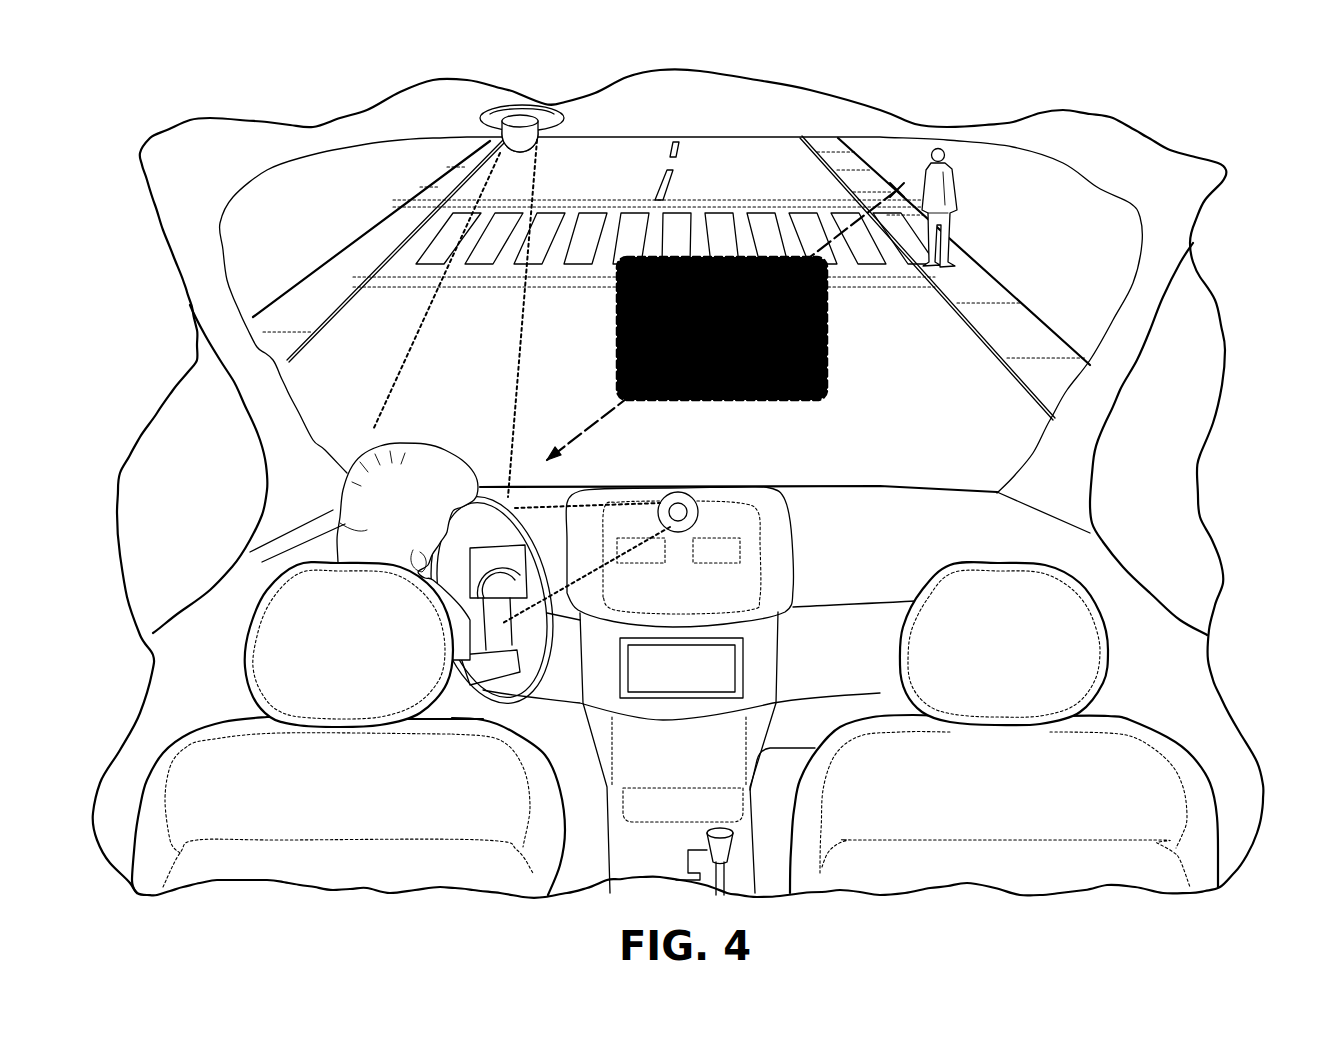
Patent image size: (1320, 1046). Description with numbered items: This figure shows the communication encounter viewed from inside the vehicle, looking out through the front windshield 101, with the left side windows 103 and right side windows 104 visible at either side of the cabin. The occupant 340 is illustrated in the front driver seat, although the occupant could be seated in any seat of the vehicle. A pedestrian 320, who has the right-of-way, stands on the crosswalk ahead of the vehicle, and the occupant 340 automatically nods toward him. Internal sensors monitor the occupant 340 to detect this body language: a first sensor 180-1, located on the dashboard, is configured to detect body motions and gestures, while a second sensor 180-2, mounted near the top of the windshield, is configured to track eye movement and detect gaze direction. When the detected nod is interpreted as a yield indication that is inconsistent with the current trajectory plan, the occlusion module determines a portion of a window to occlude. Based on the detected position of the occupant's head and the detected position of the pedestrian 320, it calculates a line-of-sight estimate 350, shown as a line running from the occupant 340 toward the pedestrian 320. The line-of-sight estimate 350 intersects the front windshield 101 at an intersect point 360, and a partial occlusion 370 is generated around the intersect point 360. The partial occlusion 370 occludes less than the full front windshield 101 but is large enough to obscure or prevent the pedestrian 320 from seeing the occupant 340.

The front windshield 101 is at (325, 193).
The left side windows 103 is at (160, 445).
The right side windows 104 is at (1210, 355).
The first sensor 180-1 is at (686, 494).
The second sensor 180-2 is at (547, 113).
The pedestrian 320 is at (952, 173).
The occupant 340 is at (360, 528).
The line-of-sight estimate 350 is at (813, 203).
The intersect point 360 is at (720, 332).
The partial occlusion 370 is at (827, 338).